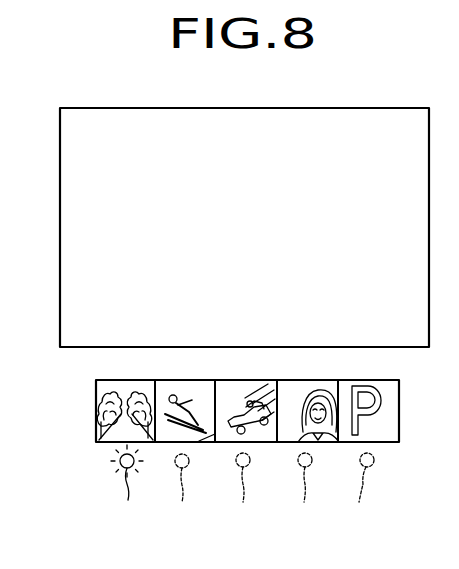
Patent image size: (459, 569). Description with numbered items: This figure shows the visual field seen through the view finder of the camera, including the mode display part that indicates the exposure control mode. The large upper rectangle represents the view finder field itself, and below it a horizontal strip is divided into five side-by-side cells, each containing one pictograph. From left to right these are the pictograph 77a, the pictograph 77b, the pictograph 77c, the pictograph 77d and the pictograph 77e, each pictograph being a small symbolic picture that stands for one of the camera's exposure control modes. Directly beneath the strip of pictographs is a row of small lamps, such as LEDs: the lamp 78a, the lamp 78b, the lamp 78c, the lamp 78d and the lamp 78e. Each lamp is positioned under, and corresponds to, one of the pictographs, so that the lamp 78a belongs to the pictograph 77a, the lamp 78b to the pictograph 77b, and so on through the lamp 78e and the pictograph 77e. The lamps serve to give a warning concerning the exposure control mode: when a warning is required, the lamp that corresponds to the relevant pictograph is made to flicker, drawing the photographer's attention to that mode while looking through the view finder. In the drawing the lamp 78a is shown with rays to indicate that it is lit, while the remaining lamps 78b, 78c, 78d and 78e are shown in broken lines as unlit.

The pictograph 77a is at (98, 441).
The pictograph 77b is at (200, 443).
The pictograph 77c is at (263, 443).
The pictograph 77d is at (325, 443).
The pictograph 77e is at (387, 443).
The lamp 78a is at (127, 489).
The lamp 78b is at (180, 494).
The lamp 78c is at (240, 493).
The lamp 78d is at (302, 493).
The lamp 78e is at (359, 493).